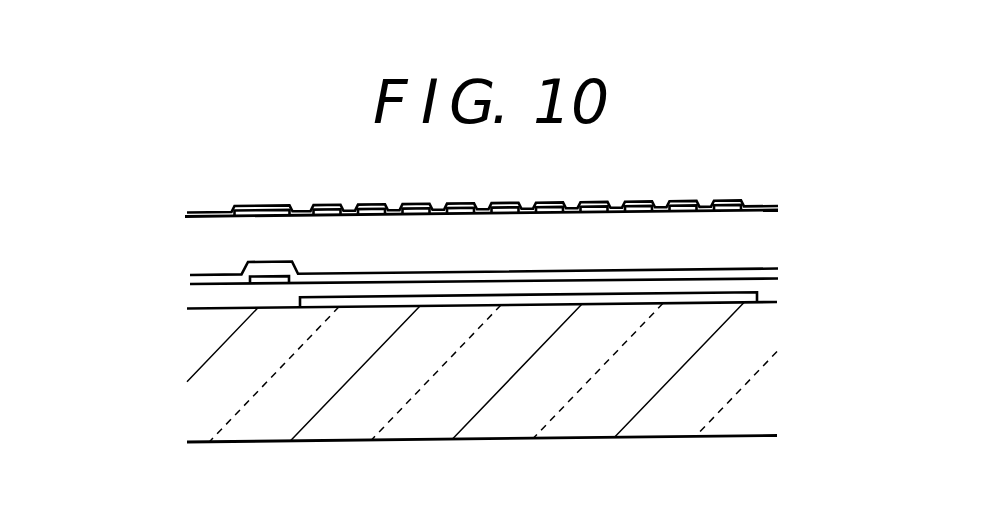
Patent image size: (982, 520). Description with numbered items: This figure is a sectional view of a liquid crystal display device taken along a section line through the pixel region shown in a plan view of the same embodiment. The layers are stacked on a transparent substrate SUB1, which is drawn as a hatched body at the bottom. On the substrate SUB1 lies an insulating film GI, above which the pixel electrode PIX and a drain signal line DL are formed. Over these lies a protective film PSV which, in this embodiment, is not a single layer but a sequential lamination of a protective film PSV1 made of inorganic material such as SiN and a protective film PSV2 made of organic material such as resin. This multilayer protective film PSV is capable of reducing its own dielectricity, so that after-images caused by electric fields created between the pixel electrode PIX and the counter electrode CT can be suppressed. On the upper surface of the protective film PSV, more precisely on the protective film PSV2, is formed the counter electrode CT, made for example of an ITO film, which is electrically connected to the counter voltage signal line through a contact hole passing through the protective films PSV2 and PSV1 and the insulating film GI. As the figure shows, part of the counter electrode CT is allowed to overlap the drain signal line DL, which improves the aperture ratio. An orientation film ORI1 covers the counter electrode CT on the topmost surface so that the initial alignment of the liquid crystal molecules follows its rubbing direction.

The orientation film ORI1 is at (776, 204).
The counter electrode CT is at (248, 210).
The protective film PSV is at (85, 227).
The protective film PSV2 is at (207, 240).
The protective film PSV1 is at (196, 283).
The drain line DL is at (253, 286).
The insulating film GI is at (762, 285).
The pixel electrode PIX is at (651, 298).
The substrate SUB1 is at (772, 375).